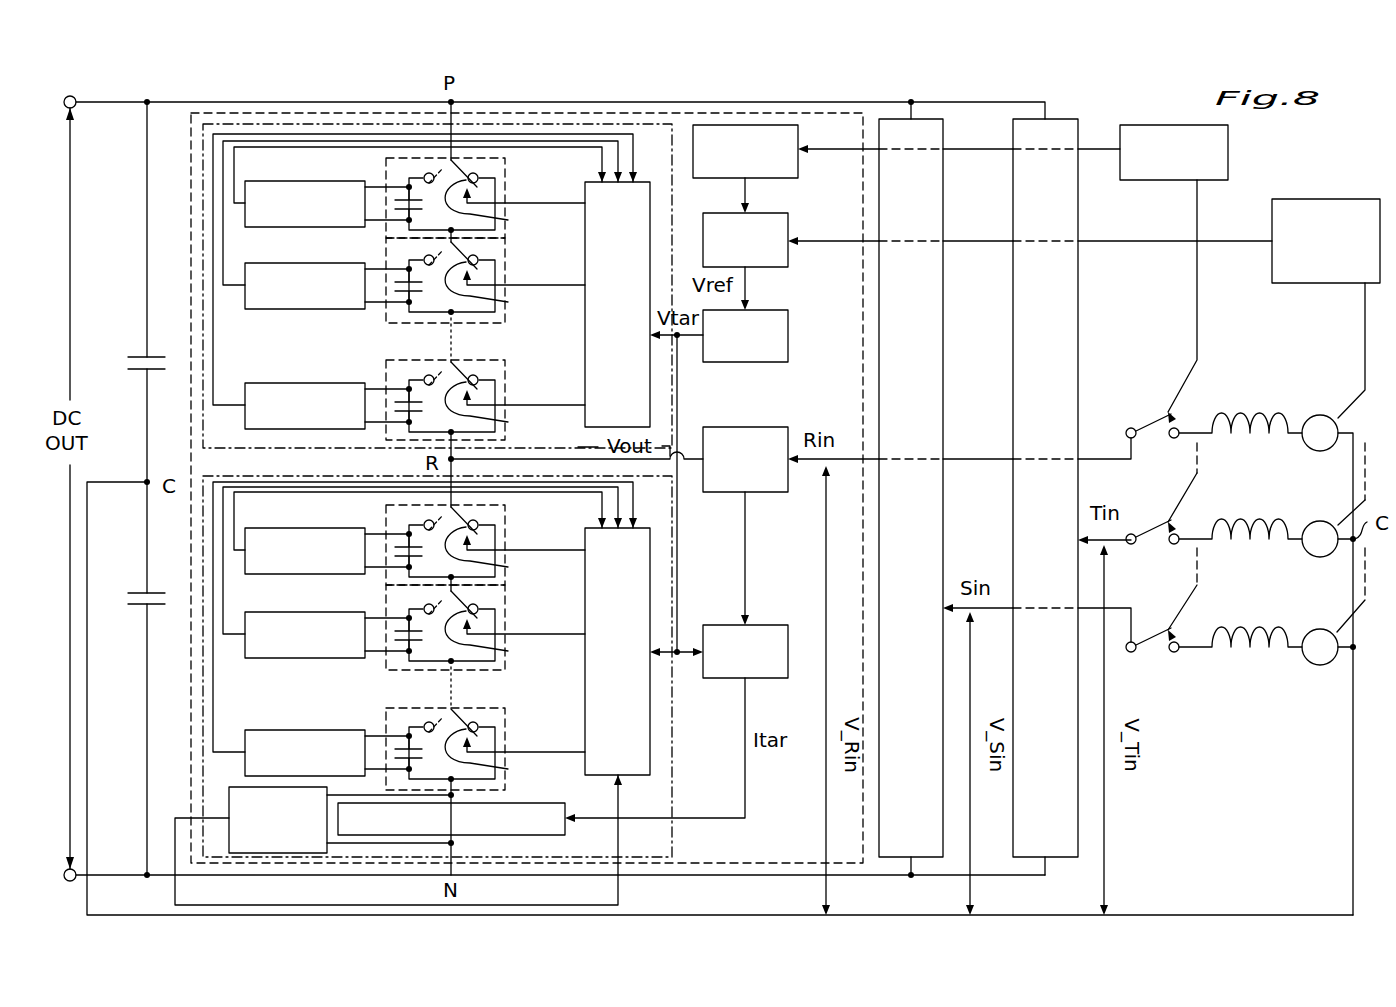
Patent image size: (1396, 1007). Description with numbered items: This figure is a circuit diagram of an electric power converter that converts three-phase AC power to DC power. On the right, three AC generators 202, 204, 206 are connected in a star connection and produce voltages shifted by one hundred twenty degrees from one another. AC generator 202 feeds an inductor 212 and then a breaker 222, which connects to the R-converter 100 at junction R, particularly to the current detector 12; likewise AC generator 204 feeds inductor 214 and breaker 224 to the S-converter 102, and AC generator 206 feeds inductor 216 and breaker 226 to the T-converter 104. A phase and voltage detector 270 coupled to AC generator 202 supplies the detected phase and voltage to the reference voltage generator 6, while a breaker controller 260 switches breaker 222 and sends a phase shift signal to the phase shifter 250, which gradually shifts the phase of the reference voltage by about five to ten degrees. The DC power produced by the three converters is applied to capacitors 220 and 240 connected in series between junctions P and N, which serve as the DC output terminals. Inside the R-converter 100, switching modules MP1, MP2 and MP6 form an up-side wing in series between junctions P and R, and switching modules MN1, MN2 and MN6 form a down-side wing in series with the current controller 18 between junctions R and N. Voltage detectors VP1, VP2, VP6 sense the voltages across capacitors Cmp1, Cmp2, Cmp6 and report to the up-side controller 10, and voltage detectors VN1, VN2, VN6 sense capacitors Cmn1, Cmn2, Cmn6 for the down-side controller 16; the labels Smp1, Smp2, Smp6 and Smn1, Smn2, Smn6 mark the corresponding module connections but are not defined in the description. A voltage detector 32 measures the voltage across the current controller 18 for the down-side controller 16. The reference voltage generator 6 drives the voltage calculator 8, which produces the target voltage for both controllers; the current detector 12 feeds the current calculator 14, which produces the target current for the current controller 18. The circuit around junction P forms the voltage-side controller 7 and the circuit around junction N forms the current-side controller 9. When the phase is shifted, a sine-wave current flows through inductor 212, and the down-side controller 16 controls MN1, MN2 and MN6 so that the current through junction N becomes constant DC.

The R-converter 100 is at (191, 108).
The voltage-side controller 7 is at (508, 123).
The current-side controller 9 is at (670, 841).
The up-side controller 10 is at (642, 180).
The down-side controller 16 is at (650, 775).
The current controller 18 is at (547, 837).
The voltage detector 32 is at (228, 790).
The phase shifter 250 is at (778, 123).
The reference voltage generator 6 is at (780, 212).
The voltage calculator 8 is at (770, 310).
The current detector 12 is at (750, 427).
The current calculator 14 is at (768, 625).
The S-converter 102 is at (928, 117).
The T-converter 104 is at (1060, 117).
The capacitor 220 is at (143, 357).
The capacitor 240 is at (140, 607).
The breaker controller 260 is at (1145, 180).
The phase and voltage detector 270 is at (1292, 283).
The breaker 222 is at (1152, 423).
The breaker 224 is at (1152, 533).
The breaker 226 is at (1152, 639).
The inductor 212 is at (1243, 415).
The inductor 214 is at (1243, 522).
The inductor 216 is at (1243, 629).
The AC generator 202 is at (1318, 415).
The AC generator 204 is at (1318, 521).
The AC generator 206 is at (1318, 629).
The switching module MP1 is at (546, 186).
The switching module MP2 is at (546, 268).
The switching module MP6 is at (546, 388).
The switching module MN1 is at (546, 533).
The switching module MN2 is at (546, 617).
The switching module MN6 is at (546, 735).
The voltage detector VP1 is at (323, 181).
The voltage detector VP2 is at (306, 263).
The voltage detector VP6 is at (304, 383).
The voltage detector VN1 is at (323, 528).
The voltage detector VN2 is at (306, 612).
The voltage detector VN6 is at (304, 730).
The capacitor Cmp1 is at (407, 221).
The capacitor Cmp2 is at (407, 303).
The capacitor Cmp6 is at (407, 423).
The capacitor Cmn1 is at (407, 568).
The capacitor Cmn2 is at (407, 652).
The capacitor Cmn6 is at (407, 735).
The sense line Smp1 is at (509, 206).
The sense line Smp2 is at (509, 288).
The sense line Smp6 is at (509, 408).
The sense line Smn1 is at (509, 553).
The sense line Smn2 is at (509, 637).
The sense line Smn6 is at (509, 755).